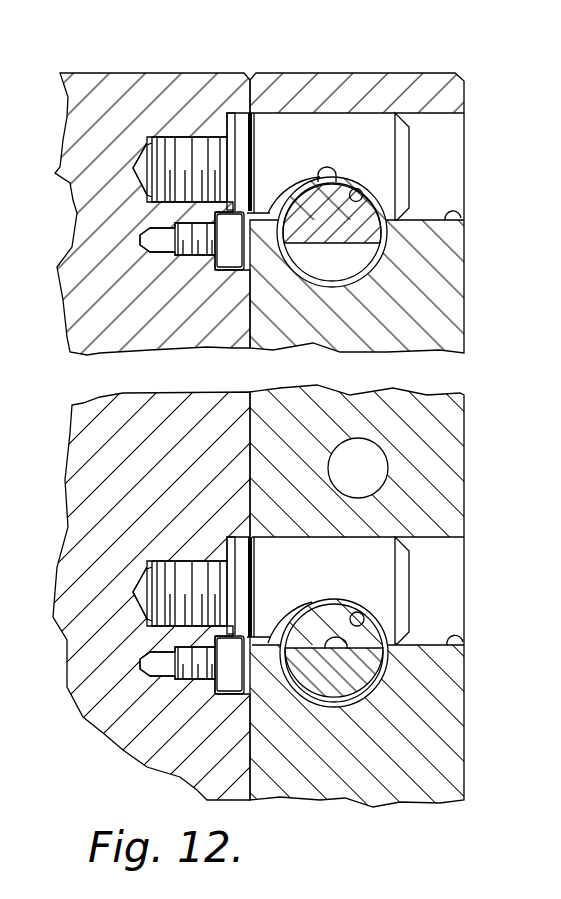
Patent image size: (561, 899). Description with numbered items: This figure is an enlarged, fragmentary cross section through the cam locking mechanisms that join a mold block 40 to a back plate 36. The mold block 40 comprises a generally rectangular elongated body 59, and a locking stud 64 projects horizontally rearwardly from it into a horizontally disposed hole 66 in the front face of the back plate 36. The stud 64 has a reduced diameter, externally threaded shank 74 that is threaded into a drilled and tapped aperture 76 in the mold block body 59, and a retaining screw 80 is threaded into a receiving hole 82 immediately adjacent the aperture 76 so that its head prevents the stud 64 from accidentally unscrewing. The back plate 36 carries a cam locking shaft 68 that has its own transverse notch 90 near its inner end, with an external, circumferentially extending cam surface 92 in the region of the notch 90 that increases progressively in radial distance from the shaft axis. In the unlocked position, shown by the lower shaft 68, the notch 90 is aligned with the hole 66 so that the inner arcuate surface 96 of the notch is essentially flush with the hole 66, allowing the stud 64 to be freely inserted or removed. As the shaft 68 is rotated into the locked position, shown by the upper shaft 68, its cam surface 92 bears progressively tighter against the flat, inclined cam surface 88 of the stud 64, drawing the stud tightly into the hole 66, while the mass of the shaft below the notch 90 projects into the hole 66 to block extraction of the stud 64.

The back plate 36 is at (392, 66).
The mold block 40 is at (125, 411).
The mold block body 59 is at (95, 83).
The locking stud 64 is at (413, 157).
The hole 66 is at (452, 215).
The cam locking shaft 68 is at (368, 232).
The externally threaded shank 74 is at (175, 150).
The drilled and tapped aperture 76 is at (147, 151).
The retaining screw 80 is at (230, 258).
The receiving hole 82 is at (187, 253).
The inclined cam surface 88 is at (352, 190).
The transverse notch 90 is at (380, 265).
The cam surface 92 is at (322, 178).
The inner arcuate surface 96 is at (332, 644).